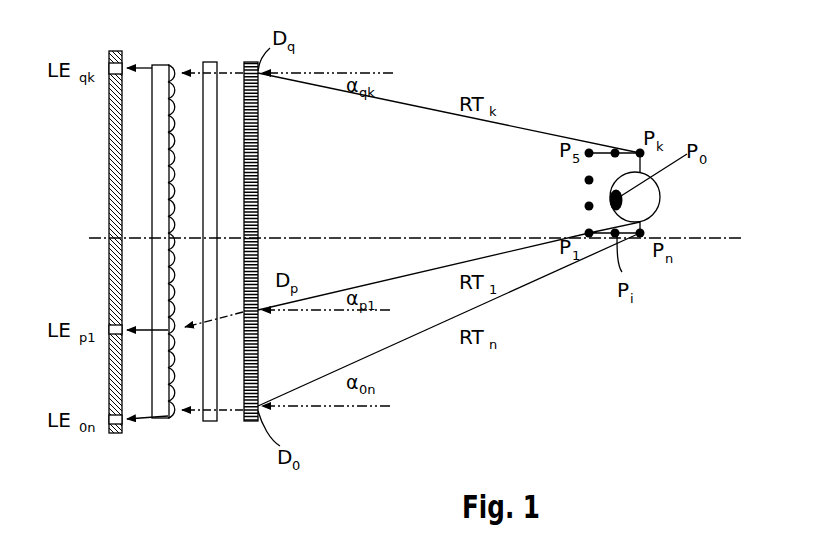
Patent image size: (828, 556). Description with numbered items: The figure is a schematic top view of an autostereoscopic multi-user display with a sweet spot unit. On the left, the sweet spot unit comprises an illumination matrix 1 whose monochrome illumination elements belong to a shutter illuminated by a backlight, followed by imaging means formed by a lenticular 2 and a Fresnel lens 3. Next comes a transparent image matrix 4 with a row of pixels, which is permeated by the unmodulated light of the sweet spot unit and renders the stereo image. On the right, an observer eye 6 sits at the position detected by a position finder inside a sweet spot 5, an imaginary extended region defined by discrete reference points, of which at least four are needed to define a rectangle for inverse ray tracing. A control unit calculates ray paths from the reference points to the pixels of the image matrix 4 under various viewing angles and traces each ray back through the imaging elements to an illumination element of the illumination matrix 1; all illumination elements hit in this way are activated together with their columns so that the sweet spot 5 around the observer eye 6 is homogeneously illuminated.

The illumination matrix 1 is at (113, 257).
The lenticular 2 is at (163, 260).
The Fresnel lens 3 is at (210, 258).
The image matrix 4 is at (250, 258).
The sweet spot 5 is at (603, 167).
The observer eye 6 is at (651, 202).